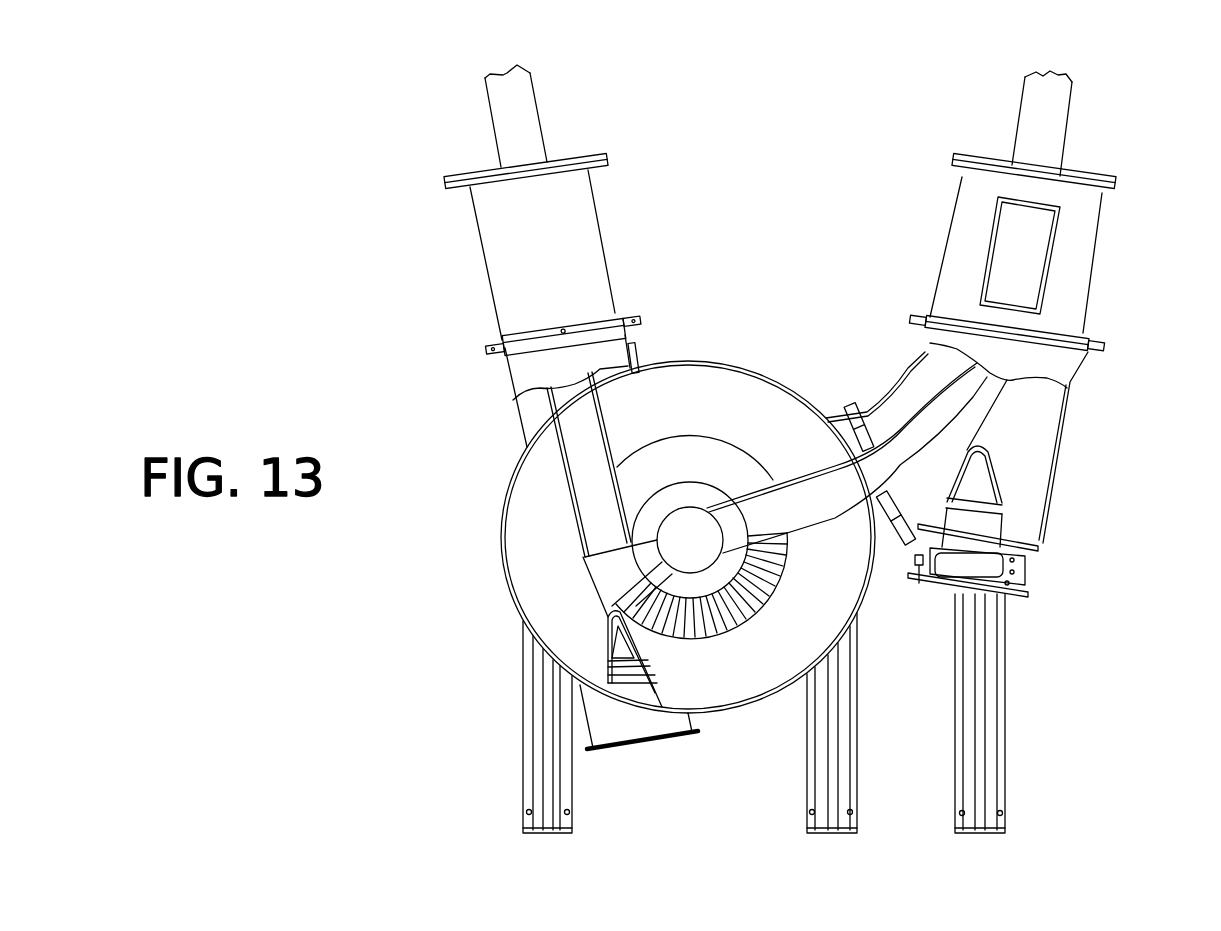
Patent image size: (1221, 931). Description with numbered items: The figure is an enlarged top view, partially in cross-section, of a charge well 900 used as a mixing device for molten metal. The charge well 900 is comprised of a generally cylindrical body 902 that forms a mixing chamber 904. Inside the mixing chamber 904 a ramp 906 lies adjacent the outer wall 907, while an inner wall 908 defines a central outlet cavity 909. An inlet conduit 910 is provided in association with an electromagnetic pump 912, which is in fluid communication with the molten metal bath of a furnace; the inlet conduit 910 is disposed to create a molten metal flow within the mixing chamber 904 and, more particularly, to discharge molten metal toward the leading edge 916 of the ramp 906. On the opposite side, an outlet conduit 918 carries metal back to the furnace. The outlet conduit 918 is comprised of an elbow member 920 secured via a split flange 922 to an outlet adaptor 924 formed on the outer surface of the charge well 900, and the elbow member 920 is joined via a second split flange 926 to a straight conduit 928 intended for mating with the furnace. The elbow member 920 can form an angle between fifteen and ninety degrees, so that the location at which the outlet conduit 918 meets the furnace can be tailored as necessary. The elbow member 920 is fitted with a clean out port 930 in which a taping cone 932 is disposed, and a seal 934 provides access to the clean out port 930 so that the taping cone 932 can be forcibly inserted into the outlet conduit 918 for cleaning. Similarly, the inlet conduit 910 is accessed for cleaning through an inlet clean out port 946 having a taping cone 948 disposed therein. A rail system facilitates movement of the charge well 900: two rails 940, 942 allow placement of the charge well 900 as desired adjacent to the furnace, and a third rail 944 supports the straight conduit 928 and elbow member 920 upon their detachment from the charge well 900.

The charge well 900 is at (692, 358).
The cylindrical body 902 is at (523, 545).
The mixing chamber 904 is at (628, 494).
The ramp 906 is at (713, 642).
The outer wall 907 is at (817, 630).
The inner wall 908 is at (697, 490).
The outlet cavity 909 is at (672, 551).
The inlet conduit 910 is at (568, 418).
The electromagnetic pump 912 is at (505, 293).
The leading edge 916 is at (627, 592).
The outlet conduit 918 is at (973, 407).
The elbow member 920 is at (1027, 533).
The split flange 922 is at (851, 404).
The outlet adaptor 924 is at (883, 540).
The second split flange 926 is at (1097, 343).
The straight conduit 928 is at (1062, 267).
The clean out port 930 is at (990, 440).
The taping cone 932 is at (980, 487).
The seal 934 is at (1022, 597).
The rail 940 is at (497, 727).
The rail 942 is at (806, 768).
The third rail 944 is at (1007, 767).
The inlet clean out port 946 is at (680, 737).
The taping cone 948 is at (610, 637).